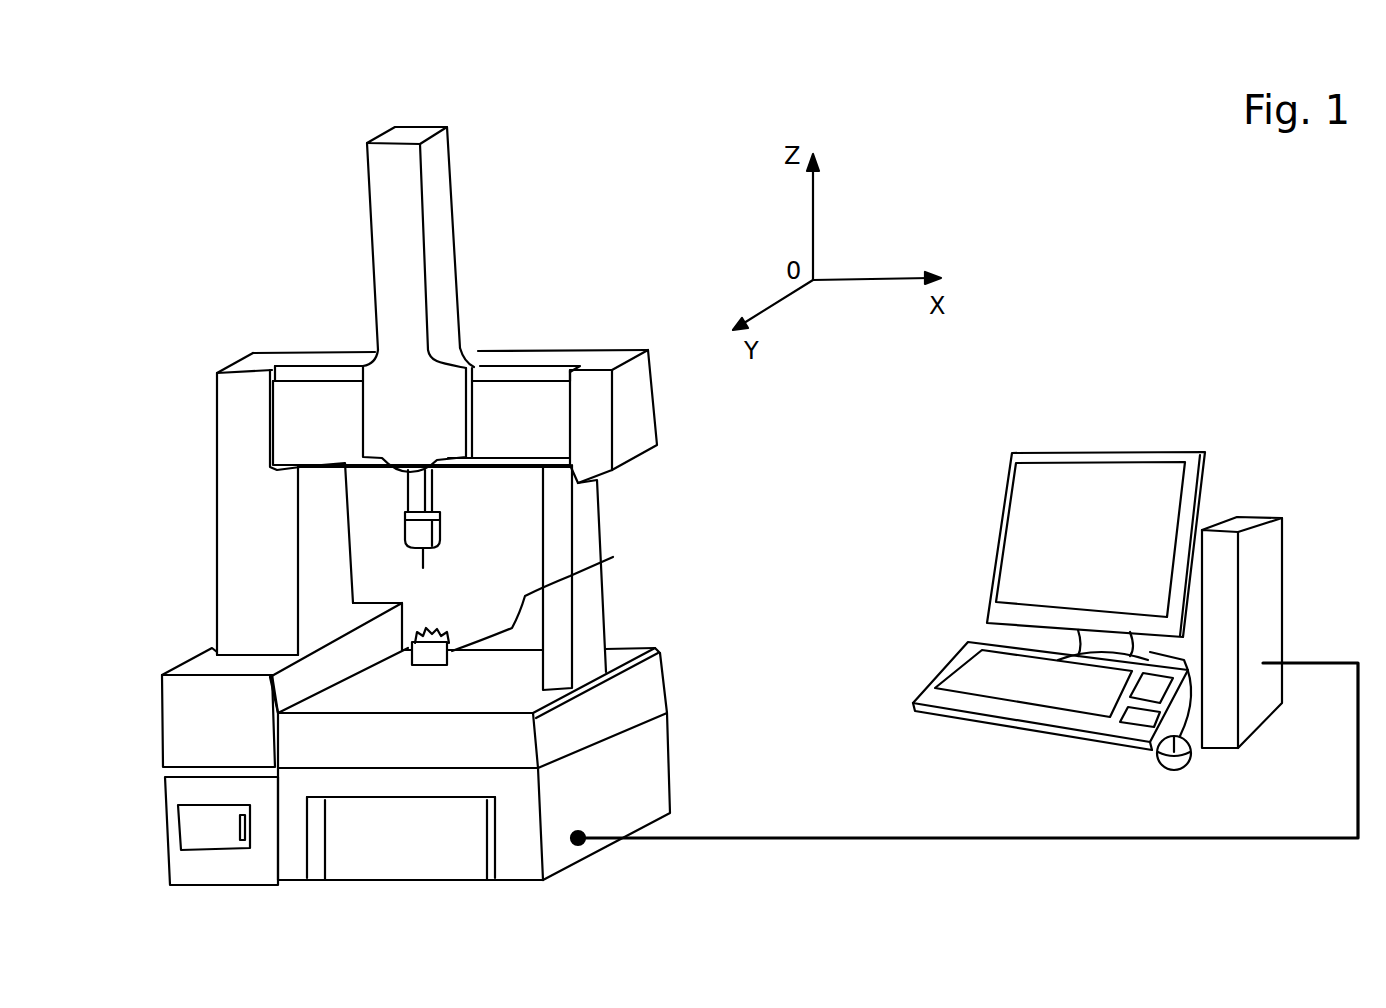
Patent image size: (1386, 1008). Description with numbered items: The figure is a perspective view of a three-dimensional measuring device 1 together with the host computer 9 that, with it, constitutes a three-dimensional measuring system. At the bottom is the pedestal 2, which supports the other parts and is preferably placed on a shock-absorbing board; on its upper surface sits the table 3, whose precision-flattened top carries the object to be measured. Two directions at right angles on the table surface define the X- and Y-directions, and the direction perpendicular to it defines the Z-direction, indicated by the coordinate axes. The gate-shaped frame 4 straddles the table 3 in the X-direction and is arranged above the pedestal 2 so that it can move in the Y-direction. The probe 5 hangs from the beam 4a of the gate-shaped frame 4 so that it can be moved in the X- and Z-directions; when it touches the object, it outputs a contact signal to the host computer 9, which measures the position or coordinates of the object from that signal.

The 3D measuring device 1 is at (187, 414).
The pedestal 2 is at (657, 787).
The table 3 is at (643, 698).
The gate-shaped frame 4 is at (216, 560).
The beam 4a is at (528, 395).
The probe 5 is at (425, 566).
The host computer 9 is at (1239, 481).